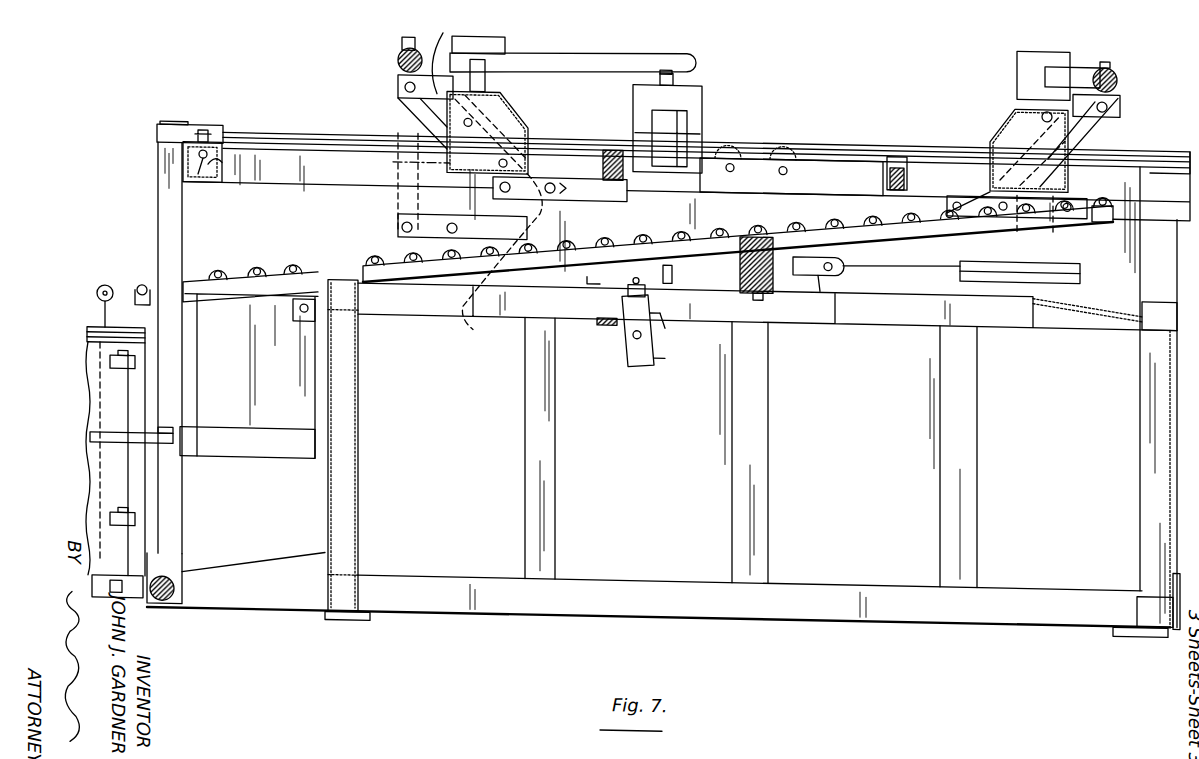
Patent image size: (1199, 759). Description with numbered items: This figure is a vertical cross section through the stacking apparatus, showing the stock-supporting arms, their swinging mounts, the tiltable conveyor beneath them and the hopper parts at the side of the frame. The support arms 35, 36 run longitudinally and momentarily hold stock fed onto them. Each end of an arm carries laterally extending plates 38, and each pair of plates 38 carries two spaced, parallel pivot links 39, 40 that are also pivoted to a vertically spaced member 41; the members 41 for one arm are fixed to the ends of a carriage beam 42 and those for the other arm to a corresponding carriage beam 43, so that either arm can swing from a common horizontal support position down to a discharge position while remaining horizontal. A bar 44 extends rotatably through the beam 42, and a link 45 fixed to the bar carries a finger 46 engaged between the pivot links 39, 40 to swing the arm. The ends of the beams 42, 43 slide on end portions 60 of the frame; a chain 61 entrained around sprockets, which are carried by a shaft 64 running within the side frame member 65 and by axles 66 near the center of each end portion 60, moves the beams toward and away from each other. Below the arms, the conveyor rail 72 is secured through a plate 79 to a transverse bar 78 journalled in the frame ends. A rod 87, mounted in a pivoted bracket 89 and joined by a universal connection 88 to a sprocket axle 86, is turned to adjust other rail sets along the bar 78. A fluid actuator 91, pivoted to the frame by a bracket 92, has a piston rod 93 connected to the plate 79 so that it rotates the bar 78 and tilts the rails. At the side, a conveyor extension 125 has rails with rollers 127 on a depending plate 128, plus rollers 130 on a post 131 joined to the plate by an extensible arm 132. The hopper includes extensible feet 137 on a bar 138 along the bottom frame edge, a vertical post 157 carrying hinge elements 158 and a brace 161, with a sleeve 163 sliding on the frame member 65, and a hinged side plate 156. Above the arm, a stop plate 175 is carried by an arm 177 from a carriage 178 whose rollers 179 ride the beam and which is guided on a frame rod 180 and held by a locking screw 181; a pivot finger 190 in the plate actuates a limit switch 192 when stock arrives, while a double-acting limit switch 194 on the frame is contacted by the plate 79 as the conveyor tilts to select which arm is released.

The support arm 35 is at (600, 165).
The support arm 36 is at (897, 139).
The laterally extending plate 38 is at (575, 190).
The pivot link 39 is at (400, 112).
The pivot link 40 is at (398, 225).
The vertically spaced member 41 is at (398, 74).
The carriage beam 42 is at (530, 125).
The carriage beam 43 is at (1000, 110).
The bar 44 is at (1045, 92).
The link 45 is at (396, 130).
The finger 46 is at (398, 158).
The end portion of frame 60 is at (284, 129).
The chain 61 is at (790, 140).
The shaft 64 is at (198, 172).
The side frame member 65 is at (227, 157).
The axle 66 is at (783, 159).
The rail 72 is at (628, 228).
The bar 78 is at (748, 260).
The plate 79 is at (602, 276).
The axle 86 is at (808, 259).
The rod 87 is at (920, 250).
The universal connection 88 is at (822, 262).
The bracket 89 is at (675, 262).
The fluid actuator 91 is at (635, 354).
The bracket 92 is at (630, 326).
The piston rod 93 is at (628, 280).
The conveyor extension 125 is at (238, 268).
The roller 127 is at (142, 282).
The depending plate 128 is at (249, 376).
The roller 130 is at (100, 284).
The post 131 is at (103, 307).
The extensible arm 132 is at (98, 411).
The axially extensible foot 137 is at (160, 555).
The bar 138 is at (165, 600).
The side plate 156 is at (90, 373).
The vertical post 157 is at (158, 190).
The hinge element 158 is at (135, 362).
The brace 161 is at (173, 425).
The sleeve 163 is at (222, 160).
The stop plate 175 is at (702, 95).
The arm 177 is at (628, 34).
The carriage 178 is at (505, 33).
The roller 179 is at (490, 82).
The frame rod 180 is at (398, 53).
The locking screw 181 is at (400, 24).
The pivot finger 190 is at (687, 112).
The limit switch 192 is at (648, 170).
The double-acting limit switch 194 is at (665, 300).